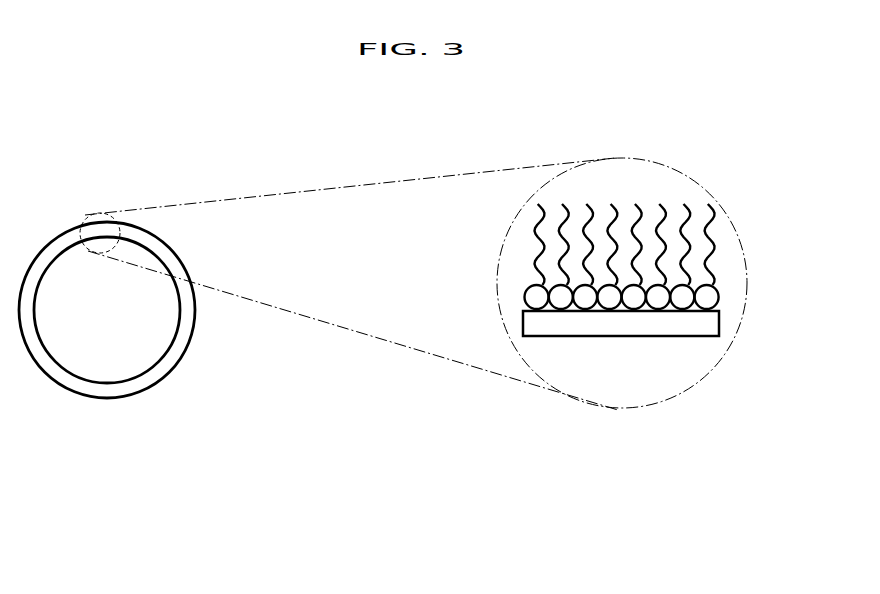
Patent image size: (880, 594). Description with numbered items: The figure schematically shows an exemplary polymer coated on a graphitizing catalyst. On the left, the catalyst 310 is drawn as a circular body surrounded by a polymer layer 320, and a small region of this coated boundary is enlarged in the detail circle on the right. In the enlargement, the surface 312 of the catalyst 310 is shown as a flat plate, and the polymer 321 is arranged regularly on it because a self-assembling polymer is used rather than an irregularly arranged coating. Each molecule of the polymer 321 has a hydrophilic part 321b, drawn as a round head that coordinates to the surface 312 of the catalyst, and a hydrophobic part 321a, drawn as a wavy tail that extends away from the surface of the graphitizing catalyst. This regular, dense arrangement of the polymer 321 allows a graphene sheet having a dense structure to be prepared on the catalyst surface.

The catalyst 310 is at (107, 310).
The polymer layer 320 is at (181, 378).
The surface of catalyst 312 is at (546, 342).
The polymer 321 is at (546, 249).
The hydrophobic part of the polymer 321a is at (528, 237).
The hydrophilic part of the polymer 321b is at (494, 278).